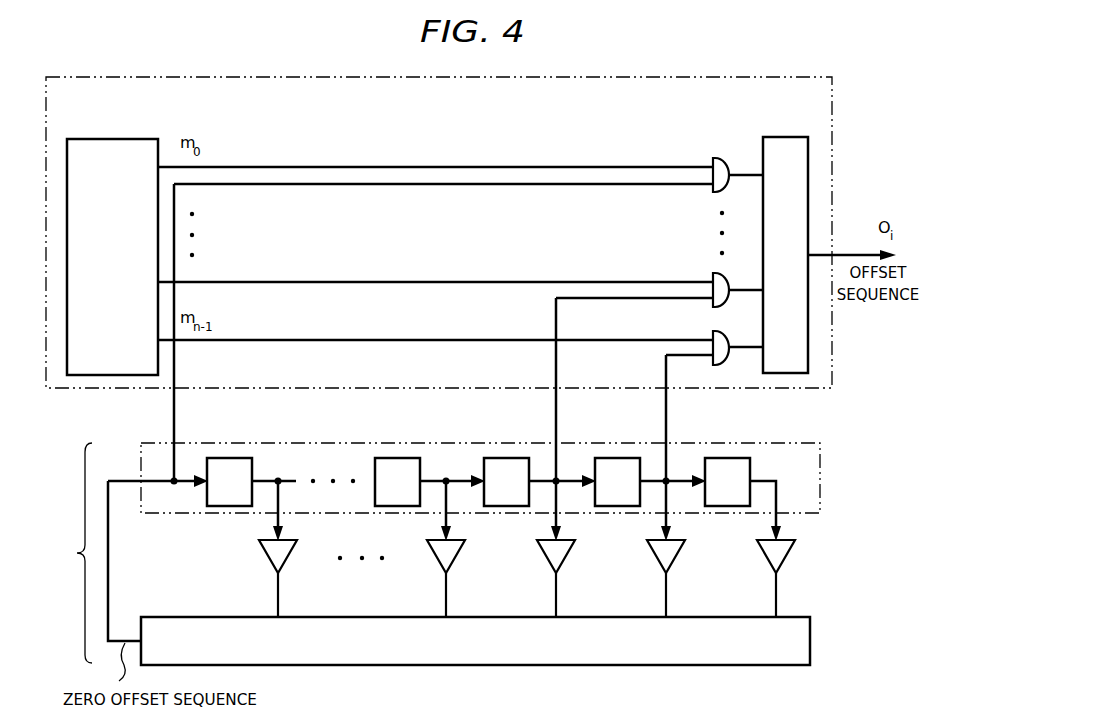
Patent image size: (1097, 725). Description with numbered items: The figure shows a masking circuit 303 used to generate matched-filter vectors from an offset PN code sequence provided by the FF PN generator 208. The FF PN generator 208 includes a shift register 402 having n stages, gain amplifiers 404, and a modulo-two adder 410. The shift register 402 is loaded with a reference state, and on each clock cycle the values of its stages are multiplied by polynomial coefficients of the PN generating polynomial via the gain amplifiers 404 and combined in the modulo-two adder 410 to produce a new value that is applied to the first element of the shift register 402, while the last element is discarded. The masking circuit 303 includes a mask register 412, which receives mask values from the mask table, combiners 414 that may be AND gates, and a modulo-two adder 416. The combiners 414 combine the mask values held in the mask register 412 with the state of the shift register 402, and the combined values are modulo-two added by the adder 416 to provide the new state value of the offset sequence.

The masking circuit 303 is at (775, 77).
The mask register 412 is at (106, 139).
The combiners 414 is at (713, 158).
The modulo-2 adder 416 is at (792, 137).
The shift register 402 is at (773, 442).
The gain amplifiers 404 is at (272, 563).
The modulo-2 adder 410 is at (810, 645).
The FF PN generator 208 is at (66, 553).